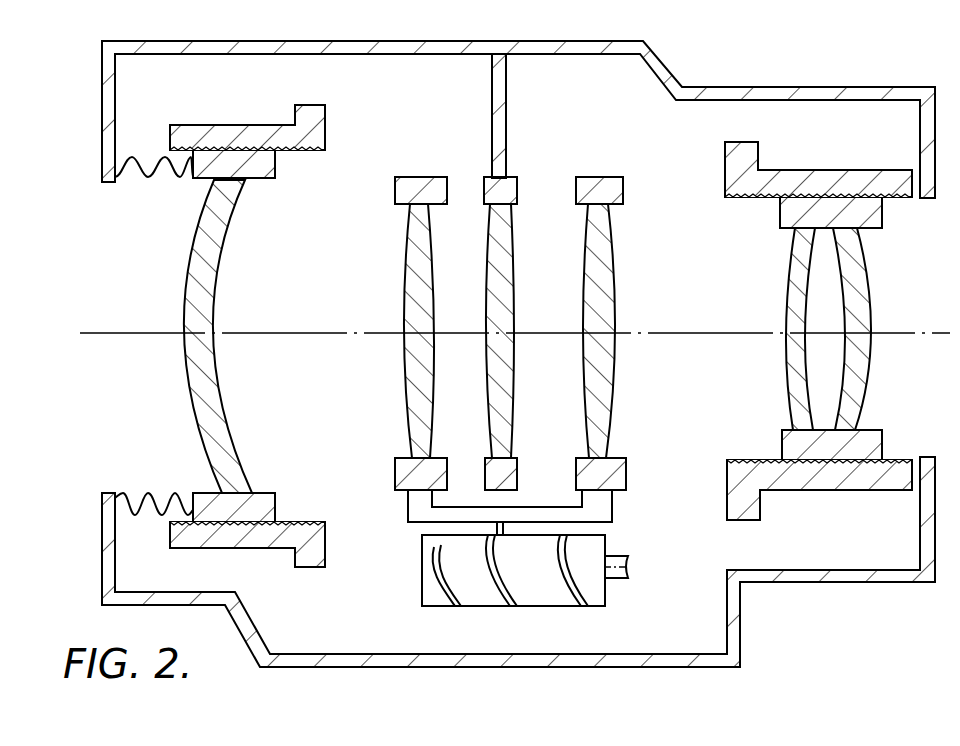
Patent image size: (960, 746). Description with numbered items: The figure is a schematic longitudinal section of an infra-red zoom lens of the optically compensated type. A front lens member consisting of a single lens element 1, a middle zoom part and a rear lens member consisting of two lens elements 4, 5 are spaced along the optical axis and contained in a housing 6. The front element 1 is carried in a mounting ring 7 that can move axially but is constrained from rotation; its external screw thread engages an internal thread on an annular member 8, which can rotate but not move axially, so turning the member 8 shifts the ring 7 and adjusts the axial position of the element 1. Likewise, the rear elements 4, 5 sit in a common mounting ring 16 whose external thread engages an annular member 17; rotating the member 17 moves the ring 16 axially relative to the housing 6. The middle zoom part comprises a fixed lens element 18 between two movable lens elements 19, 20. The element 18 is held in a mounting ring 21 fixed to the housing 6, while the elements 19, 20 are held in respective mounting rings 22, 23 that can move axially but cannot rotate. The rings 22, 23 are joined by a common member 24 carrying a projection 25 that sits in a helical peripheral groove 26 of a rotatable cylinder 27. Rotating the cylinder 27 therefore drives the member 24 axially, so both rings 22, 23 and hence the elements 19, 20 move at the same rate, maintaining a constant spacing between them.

The lens element 1 is at (222, 272).
The lens element 4 is at (793, 282).
The lens element 5 is at (868, 283).
The housing 6 is at (371, 57).
The mounting ring 7 is at (275, 165).
The annular member 8 is at (255, 548).
The mounting ring 16 is at (882, 220).
The annular member 17 is at (800, 490).
The fixed lens element 18 is at (515, 291).
The movable lens element 19 is at (407, 276).
The movable lens element 20 is at (617, 285).
The mounting ring 21 is at (516, 182).
The mounting ring 22 is at (410, 177).
The mounting ring 23 is at (600, 178).
The common member 24 is at (612, 505).
The projection 25 is at (506, 530).
The helical peripheral groove 26 is at (525, 605).
The rotatable cylinder 27 is at (480, 598).